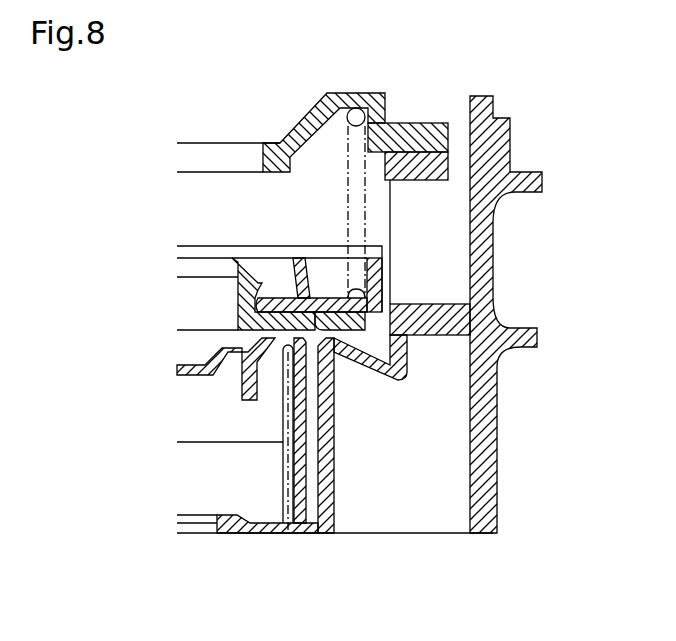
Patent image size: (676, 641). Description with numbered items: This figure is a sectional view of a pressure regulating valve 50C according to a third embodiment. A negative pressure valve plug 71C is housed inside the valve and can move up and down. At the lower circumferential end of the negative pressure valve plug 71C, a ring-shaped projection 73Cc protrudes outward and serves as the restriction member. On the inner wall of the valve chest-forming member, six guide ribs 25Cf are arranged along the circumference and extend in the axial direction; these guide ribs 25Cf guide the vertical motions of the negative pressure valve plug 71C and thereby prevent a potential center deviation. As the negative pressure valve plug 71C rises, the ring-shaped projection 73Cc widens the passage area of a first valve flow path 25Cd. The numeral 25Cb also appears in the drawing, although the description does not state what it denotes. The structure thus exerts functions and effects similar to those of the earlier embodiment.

The pressure regulating valve 50C is at (153, 335).
The negative pressure valve plug 71C is at (190, 374).
The first valve flow path 25Cd is at (312, 378).
The cylindrical portion 25Cb is at (322, 408).
The guide ribs 25Cf is at (330, 430).
The ring-shaped projection 73Cc is at (307, 450).